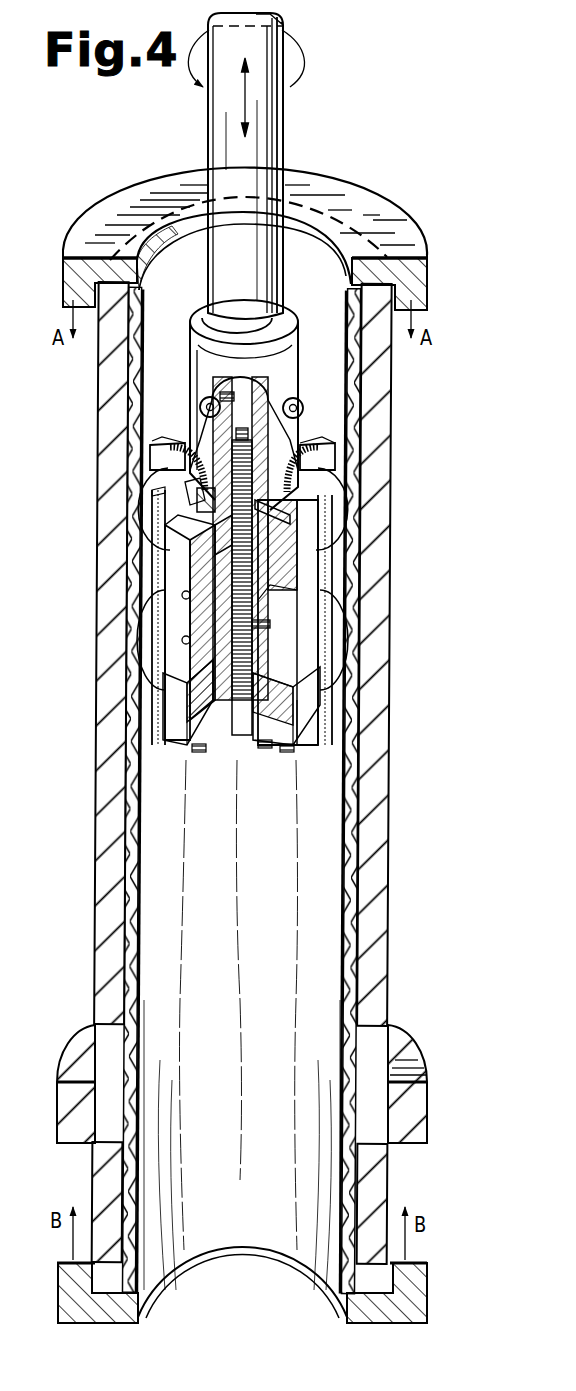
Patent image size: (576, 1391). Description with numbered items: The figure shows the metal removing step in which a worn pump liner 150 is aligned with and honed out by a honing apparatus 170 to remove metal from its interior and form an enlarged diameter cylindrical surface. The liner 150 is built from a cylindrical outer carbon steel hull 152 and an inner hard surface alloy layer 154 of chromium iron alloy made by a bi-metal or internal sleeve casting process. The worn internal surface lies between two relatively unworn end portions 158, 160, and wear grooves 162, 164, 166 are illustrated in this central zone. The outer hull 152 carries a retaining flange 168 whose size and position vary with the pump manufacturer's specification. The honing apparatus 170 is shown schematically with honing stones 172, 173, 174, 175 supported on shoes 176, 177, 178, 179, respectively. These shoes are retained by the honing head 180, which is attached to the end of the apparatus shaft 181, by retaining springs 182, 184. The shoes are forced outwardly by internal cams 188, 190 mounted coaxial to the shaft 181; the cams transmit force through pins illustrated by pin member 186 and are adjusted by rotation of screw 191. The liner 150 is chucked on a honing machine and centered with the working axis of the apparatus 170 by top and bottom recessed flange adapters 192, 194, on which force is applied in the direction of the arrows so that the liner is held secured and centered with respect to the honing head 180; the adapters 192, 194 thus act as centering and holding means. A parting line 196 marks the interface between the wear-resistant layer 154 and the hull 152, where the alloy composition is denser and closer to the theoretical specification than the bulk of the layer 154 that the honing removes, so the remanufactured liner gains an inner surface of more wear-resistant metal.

The worn liner 150 is at (80, 486).
The outer carbon steel hull 152 is at (103, 366).
The inner hard surface alloy layer 154 is at (133, 378).
The unworn end portion 158 is at (241, 1250).
The unworn end portion 160 is at (318, 263).
The wear groove 162 is at (296, 1060).
The wear groove 164 is at (243, 1027).
The wear groove 166 is at (183, 1027).
The retaining flange 168 is at (82, 1048).
The honing apparatus 170 is at (181, 396).
The honing stone 172 is at (155, 585).
The honing stone 173 is at (155, 445).
The honing stone 174 is at (330, 620).
The honing stone 175 is at (305, 440).
The shoe 176 is at (200, 631).
The shoe 177 is at (158, 457).
The shoe 178 is at (305, 632).
The shoe 179 is at (327, 462).
The honing head 180 is at (301, 716).
The apparatus shaft 181 is at (282, 160).
The retaining spring 182 is at (292, 748).
The retaining spring 184 is at (200, 510).
The pin member 186 is at (246, 400).
The internal cam 188 is at (235, 735).
The internal cam 190 is at (258, 462).
The screw 191 is at (238, 548).
The top recessed flange adapter 192 is at (62, 252).
The bottom recessed flange adapter 194 is at (66, 1305).
The parting line 196 is at (123, 850).